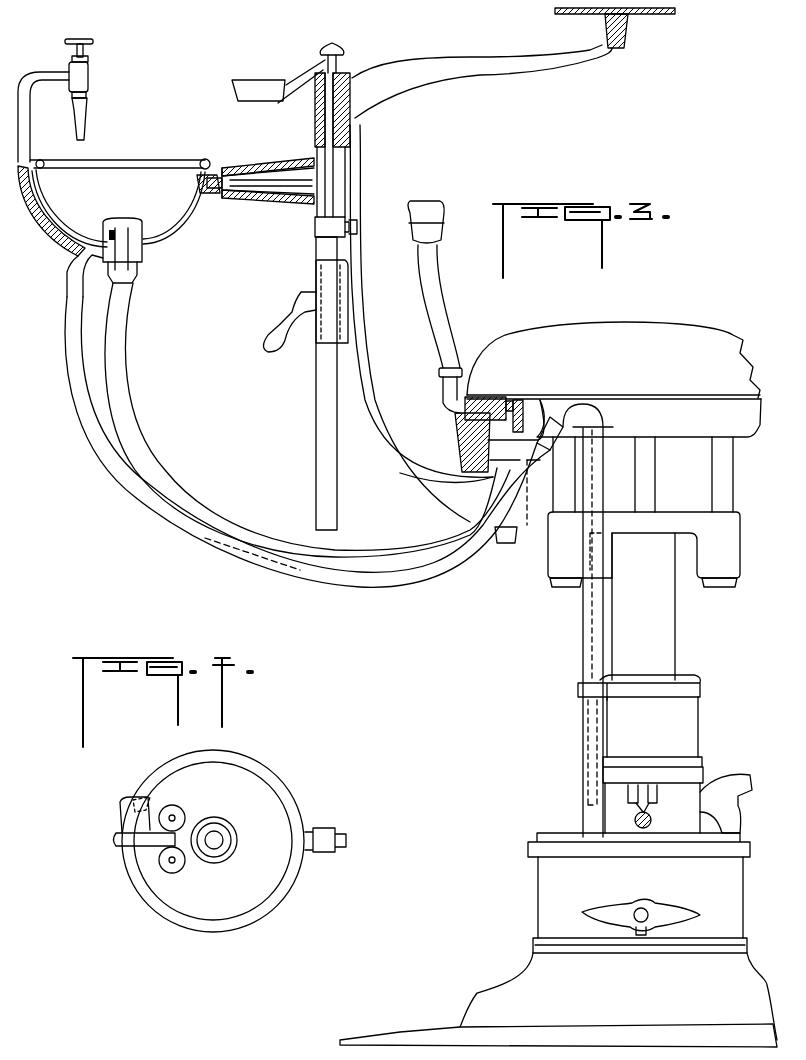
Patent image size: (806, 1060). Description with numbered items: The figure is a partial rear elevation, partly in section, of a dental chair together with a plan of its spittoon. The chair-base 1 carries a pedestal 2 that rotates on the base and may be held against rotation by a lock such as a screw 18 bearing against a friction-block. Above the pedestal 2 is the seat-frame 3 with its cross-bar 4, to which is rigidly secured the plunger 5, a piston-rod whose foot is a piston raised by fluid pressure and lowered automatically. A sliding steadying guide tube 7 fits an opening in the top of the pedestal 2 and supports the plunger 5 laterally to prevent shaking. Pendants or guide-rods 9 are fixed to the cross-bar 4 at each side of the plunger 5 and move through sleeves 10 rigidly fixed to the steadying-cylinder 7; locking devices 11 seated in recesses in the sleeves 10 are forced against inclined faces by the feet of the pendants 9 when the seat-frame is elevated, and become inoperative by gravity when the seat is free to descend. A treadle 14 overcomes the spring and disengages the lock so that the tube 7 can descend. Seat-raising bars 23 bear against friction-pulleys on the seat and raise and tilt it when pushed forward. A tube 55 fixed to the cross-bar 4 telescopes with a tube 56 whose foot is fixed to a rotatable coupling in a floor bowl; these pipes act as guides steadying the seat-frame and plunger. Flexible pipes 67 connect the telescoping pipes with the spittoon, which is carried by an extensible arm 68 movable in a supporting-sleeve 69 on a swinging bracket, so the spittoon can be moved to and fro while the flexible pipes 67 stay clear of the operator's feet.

The chair-base 1 is at (455, 1024).
The pedestal 2 is at (693, 728).
The seat-frame 3 is at (456, 438).
The cross-bar 4 is at (654, 410).
The plunger 5 is at (652, 482).
The sliding steadying guide tube 7 is at (678, 633).
The pendants or guide-rods 9 is at (742, 482).
The sleeves 10 is at (748, 542).
The locking devices 11 is at (708, 582).
The treadle 14 is at (657, 810).
The screw 18 is at (647, 910).
The seat-raising bars 23 is at (505, 418).
The tube 55 is at (582, 614).
The telescoping tube 56 is at (585, 732).
The flexible pipes 67 is at (230, 547).
The extensible arm 68 is at (210, 196).
The supporting-sleeve 69 is at (268, 199).